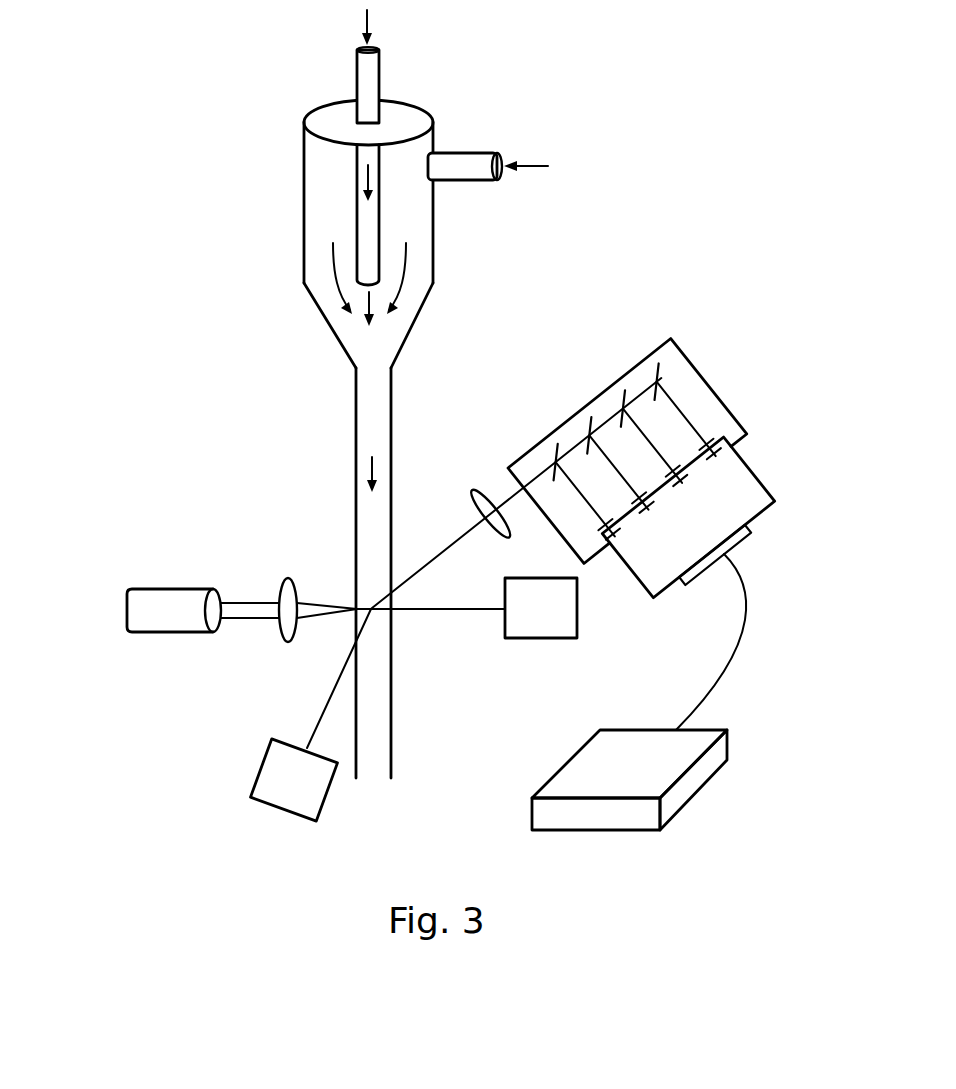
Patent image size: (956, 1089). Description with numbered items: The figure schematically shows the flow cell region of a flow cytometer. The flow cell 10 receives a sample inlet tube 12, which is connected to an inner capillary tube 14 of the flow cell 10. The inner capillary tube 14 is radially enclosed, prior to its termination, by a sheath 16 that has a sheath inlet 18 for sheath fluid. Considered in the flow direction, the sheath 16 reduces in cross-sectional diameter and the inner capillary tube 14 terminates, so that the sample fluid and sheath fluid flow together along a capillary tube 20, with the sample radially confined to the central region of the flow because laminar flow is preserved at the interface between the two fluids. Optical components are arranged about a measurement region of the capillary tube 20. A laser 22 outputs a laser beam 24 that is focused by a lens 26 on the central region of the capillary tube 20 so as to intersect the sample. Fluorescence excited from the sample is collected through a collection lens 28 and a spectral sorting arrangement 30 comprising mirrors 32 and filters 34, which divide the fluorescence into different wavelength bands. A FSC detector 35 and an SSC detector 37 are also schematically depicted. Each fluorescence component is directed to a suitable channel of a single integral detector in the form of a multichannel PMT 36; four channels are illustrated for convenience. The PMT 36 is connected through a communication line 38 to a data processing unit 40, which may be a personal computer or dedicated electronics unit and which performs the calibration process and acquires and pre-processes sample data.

The flow cell 10 is at (110, 215).
The sample inlet tube 12 is at (379, 72).
The inner capillary tube 14 is at (357, 193).
The sheath 16 is at (303, 158).
The sheath inlet 18 is at (462, 182).
The capillary tube 20 is at (372, 400).
The laser 22 is at (127, 612).
The laser beam 24 is at (238, 620).
The lens 26 is at (285, 580).
The collection lens 28 is at (475, 492).
The spectral sorting arrangement 30 is at (673, 338).
The mirrors 32 is at (603, 398).
The filters 34 is at (703, 435).
The FSC detector 35 is at (540, 640).
The multichannel PMT 36 is at (758, 478).
The SSC detector 37 is at (250, 797).
The communication line 38 is at (748, 630).
The data processing unit 40 is at (729, 748).